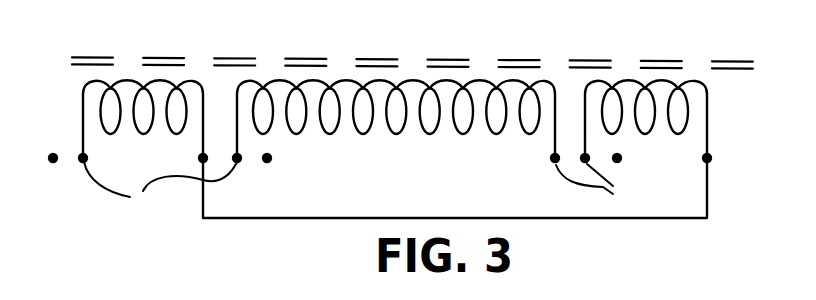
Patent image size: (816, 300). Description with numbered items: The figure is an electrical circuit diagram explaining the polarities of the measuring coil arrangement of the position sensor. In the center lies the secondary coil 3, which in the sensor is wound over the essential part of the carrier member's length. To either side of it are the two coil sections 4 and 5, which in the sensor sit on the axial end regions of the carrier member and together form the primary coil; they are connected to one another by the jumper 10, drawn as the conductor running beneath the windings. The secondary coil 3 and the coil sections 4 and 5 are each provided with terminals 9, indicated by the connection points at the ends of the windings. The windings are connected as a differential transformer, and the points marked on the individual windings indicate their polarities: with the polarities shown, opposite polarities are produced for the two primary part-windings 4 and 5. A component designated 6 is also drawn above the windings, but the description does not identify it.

The secondary coil 3 is at (496, 88).
The coil section 4 is at (129, 83).
The coil section 5 is at (656, 88).
The magnetic core laminations 6 is at (303, 61).
The terminals 9 is at (356, 187).
The jumper 10 is at (347, 218).